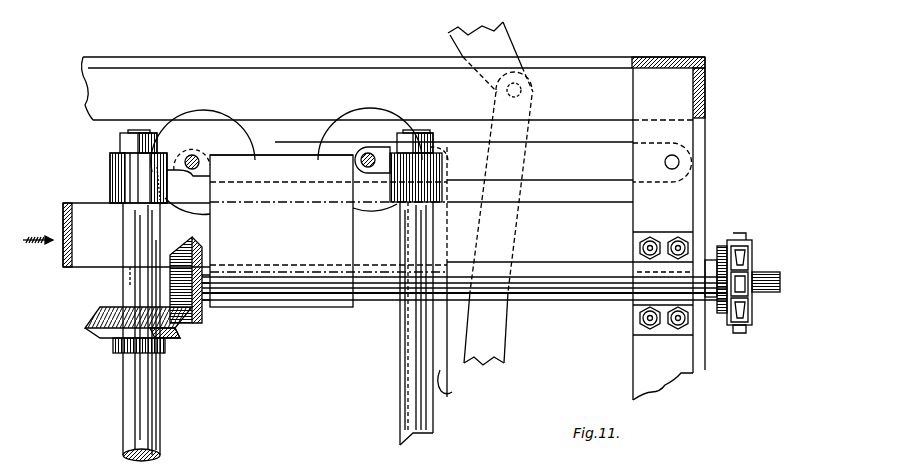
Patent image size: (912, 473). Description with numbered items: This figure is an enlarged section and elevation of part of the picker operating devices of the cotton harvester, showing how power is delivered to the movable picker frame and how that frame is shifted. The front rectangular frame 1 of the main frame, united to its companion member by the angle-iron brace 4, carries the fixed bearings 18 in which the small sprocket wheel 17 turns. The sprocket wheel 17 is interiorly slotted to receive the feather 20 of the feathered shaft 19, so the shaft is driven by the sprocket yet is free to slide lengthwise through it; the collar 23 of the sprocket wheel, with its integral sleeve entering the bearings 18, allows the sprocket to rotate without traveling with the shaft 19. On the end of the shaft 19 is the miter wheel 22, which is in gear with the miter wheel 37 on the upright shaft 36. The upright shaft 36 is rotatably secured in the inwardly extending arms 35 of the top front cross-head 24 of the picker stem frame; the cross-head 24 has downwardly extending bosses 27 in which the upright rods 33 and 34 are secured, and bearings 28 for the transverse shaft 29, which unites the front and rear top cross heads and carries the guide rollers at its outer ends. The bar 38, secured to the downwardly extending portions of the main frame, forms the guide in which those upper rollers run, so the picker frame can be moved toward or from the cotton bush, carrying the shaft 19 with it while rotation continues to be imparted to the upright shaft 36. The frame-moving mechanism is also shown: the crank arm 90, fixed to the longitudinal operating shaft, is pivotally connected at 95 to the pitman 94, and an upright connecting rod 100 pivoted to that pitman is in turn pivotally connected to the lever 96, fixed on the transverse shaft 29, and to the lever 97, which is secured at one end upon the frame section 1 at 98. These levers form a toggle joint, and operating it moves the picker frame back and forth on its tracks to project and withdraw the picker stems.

The rectangular frame 1 is at (393, 228).
The brace 4 is at (685, 56).
The sprocket wheel 17 is at (747, 260).
The bearings 18 is at (642, 307).
The feathered shaft 19 is at (535, 290).
The feather 20 is at (563, 289).
The miter wheel 22 is at (195, 326).
The collar 23 is at (720, 247).
The top front cross-head 24 is at (282, 160).
The bosses 27 is at (455, 165).
The bearings 28 is at (197, 157).
The transverse shaft 29 is at (200, 157).
The upright rod 33 is at (403, 367).
The upright rod 34 is at (128, 172).
The inwardly extending arm 35 is at (167, 160).
The upright shaft 36 is at (133, 282).
The miter wheel 37 is at (202, 117).
The bar 38 is at (348, 272).
The crank arm 90 is at (492, 44).
The pitman 94 is at (498, 228).
The pivot 95 is at (517, 88).
The lever 96 is at (312, 138).
The lever 97 is at (540, 167).
The pivot 98 is at (680, 163).
The connecting rod 100 is at (446, 393).